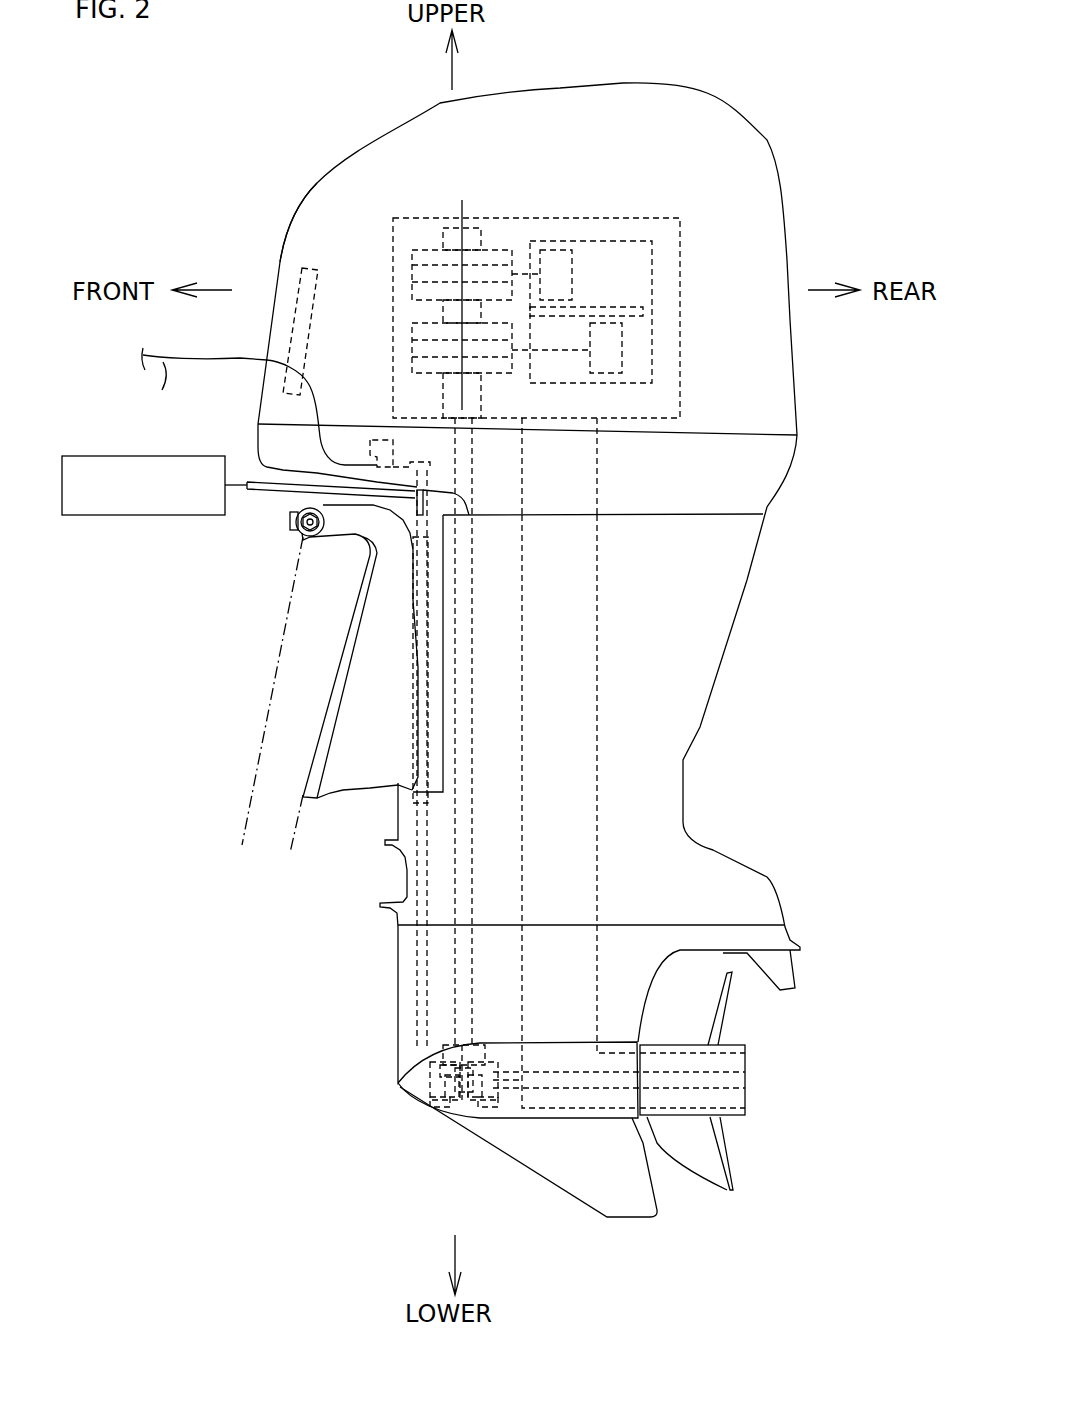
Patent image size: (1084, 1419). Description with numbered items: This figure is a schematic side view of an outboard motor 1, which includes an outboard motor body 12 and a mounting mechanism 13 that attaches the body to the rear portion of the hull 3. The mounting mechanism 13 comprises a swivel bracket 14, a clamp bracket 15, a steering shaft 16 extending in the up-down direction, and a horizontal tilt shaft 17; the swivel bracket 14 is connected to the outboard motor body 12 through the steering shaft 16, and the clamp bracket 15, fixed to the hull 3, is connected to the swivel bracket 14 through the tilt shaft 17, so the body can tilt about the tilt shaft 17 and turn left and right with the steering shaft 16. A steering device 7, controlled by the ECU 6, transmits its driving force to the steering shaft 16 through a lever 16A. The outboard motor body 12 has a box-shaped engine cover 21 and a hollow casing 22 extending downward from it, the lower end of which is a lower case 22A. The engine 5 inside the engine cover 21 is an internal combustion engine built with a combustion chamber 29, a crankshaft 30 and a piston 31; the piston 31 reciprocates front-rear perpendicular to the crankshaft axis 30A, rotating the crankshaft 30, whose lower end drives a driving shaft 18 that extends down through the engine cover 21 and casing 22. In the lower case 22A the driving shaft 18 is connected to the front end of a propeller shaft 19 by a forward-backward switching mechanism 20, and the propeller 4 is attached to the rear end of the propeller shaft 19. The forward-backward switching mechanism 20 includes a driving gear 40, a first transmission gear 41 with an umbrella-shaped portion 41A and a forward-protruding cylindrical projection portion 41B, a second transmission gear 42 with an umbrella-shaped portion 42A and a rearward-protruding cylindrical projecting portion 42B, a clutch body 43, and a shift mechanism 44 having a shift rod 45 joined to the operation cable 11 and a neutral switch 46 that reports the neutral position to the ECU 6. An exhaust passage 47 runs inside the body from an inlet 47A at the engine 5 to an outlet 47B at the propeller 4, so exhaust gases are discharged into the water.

The outboard motor 1 is at (333, 108).
The hull 3 is at (262, 750).
The propeller 4 is at (723, 1145).
The engine 5 is at (433, 215).
The ECU 6 is at (290, 337).
The steering device 7 is at (100, 515).
The operation cable 11 is at (259, 406).
The outboard motor body 12 is at (308, 181).
The mounting mechanism 13 is at (250, 617).
The swivel bracket 14 is at (398, 783).
The clamp bracket 15 is at (323, 795).
The steering shaft 16 is at (430, 803).
The lever 16A is at (252, 480).
The tilt shaft 17 is at (295, 522).
The driving shaft 18 is at (463, 653).
The propeller shaft 19 is at (573, 1080).
The forward-backward switching mechanism 20 is at (378, 1060).
The engine cover 21 is at (803, 344).
The casing 22 is at (749, 601).
The lower case 22A is at (623, 968).
The combustion chamber 29 is at (640, 264).
The crankshaft 30 is at (443, 237).
The crankshaft axis 30A is at (460, 313).
The piston 31 is at (572, 278).
The driving gear 40 is at (460, 1042).
The first transmission gear 41 is at (452, 1233).
The umbrella-shaped portion 41A is at (447, 1110).
The cylindrical projection portion 41B is at (433, 1113).
The second transmission gear 42 is at (593, 1233).
The umbrella-shaped portion 42A is at (467, 1110).
The cylindrical projecting portion 42B is at (480, 1107).
The clutch body 43 is at (450, 1110).
The shift mechanism 44 is at (403, 1082).
The shift rod 45 is at (423, 953).
The neutral switch 46 is at (382, 432).
The exhaust passage 47 is at (578, 741).
The inlet 47A is at (557, 420).
The outlet 47B is at (745, 1063).